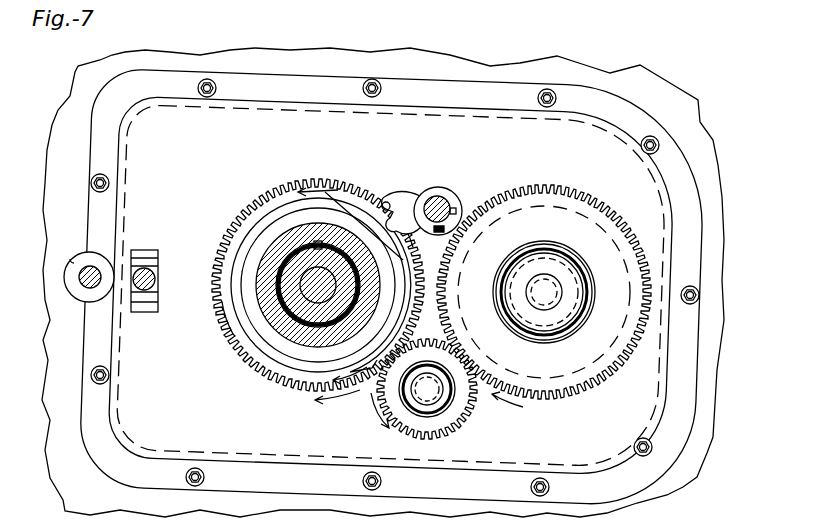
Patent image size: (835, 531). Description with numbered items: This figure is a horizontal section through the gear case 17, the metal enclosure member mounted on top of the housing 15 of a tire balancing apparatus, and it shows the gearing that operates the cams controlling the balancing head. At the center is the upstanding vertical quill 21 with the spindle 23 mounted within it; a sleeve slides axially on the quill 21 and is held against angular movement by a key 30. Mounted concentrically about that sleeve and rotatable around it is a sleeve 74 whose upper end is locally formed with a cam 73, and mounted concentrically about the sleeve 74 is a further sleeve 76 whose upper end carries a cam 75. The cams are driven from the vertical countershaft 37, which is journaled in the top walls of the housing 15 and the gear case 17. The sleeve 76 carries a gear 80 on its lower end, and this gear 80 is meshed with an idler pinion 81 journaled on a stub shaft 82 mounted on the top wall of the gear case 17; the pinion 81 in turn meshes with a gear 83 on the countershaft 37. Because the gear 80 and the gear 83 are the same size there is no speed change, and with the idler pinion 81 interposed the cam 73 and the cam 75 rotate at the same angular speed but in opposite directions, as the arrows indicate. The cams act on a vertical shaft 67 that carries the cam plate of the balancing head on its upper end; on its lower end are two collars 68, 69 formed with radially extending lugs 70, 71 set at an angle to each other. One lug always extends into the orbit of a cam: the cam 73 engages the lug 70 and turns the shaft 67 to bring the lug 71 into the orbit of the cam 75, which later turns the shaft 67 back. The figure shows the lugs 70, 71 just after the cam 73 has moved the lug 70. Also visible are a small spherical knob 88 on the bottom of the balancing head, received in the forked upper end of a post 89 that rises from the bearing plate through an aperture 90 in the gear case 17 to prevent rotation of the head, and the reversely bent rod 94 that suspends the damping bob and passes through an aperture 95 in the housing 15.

The housing 15 is at (58, 338).
The gear case 17 is at (658, 218).
The quill 21 is at (287, 264).
The spindle 23 is at (283, 320).
The key 30 is at (322, 244).
The countershaft 37 is at (548, 262).
The shaft 67 is at (446, 199).
The collar 68 is at (432, 190).
The collar 69 is at (412, 229).
The lug 70 is at (405, 198).
The lug 71 is at (385, 203).
The cam 73 is at (324, 205).
The sleeve 74 is at (273, 230).
The cam 75 is at (377, 367).
The sleeve 76 is at (283, 363).
The gear 80 is at (212, 324).
The idler pinion 81 is at (456, 430).
The stub shaft 82 is at (431, 392).
The gear 83 is at (580, 394).
The spherical knob 88 is at (158, 281).
The post 89 is at (146, 303).
The aperture 90 is at (145, 250).
The rod 94 is at (88, 279).
The aperture 95 is at (70, 266).